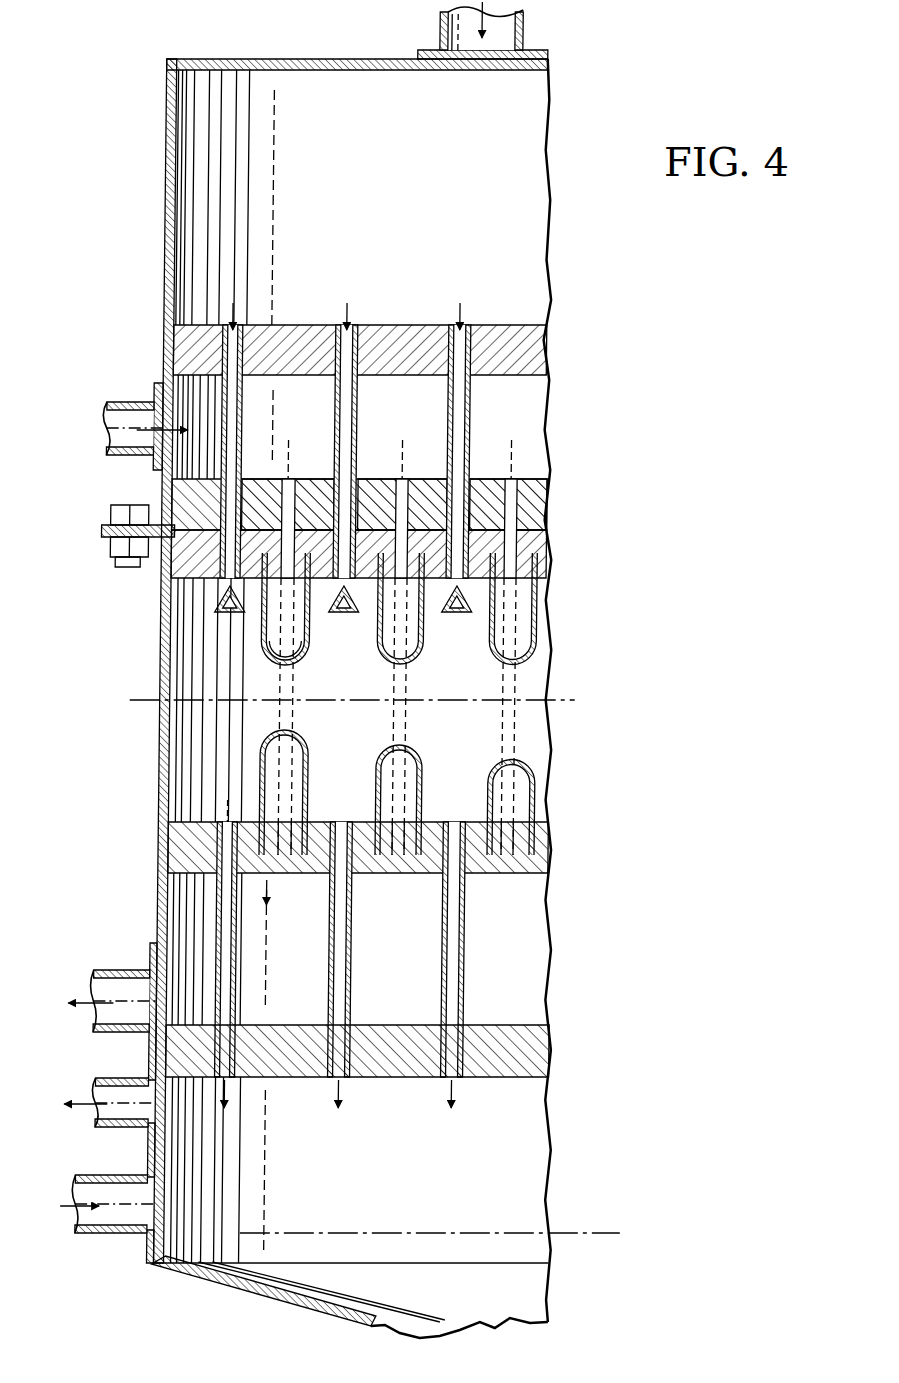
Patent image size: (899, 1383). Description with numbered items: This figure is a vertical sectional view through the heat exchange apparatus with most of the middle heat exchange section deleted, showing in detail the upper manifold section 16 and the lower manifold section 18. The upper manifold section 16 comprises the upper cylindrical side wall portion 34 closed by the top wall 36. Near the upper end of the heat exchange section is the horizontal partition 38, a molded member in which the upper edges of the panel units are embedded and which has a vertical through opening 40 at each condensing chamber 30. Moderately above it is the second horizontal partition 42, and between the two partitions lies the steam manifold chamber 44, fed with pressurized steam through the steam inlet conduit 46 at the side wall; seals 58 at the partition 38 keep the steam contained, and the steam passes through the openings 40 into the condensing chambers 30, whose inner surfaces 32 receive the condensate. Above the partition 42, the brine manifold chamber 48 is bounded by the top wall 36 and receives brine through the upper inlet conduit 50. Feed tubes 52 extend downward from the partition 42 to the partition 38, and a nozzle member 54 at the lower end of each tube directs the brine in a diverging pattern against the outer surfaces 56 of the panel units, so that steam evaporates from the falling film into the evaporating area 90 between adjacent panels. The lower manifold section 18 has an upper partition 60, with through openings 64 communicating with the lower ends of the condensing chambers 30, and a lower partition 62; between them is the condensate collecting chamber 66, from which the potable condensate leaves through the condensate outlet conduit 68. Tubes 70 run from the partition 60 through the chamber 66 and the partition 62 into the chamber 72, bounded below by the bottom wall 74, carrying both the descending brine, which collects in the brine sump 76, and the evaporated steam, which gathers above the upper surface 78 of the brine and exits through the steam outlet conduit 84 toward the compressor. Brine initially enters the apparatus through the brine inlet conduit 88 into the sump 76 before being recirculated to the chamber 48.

The upper manifold section 16 is at (597, 378).
The lower manifold section 18 is at (586, 940).
The condensing chamber 30 is at (508, 660).
The inner surface 32 is at (532, 612).
The upper cylindrical side wall portion 34 is at (164, 300).
The top wall 36 is at (346, 59).
The horizontal partition 38 is at (553, 545).
The vertical through opening 40 is at (289, 505).
The second horizontal partition 42 is at (550, 345).
The steam manifold chamber 44 is at (551, 428).
The steam inlet conduit 46 is at (156, 392).
The brine manifold chamber 48 is at (511, 219).
The upper inlet conduit 50 is at (518, 40).
The feed tube 52 is at (446, 400).
The nozzle member 54 is at (345, 614).
The outer surface 56 is at (312, 660).
The seal 58 is at (400, 479).
The upper partition 60 is at (553, 852).
The lower partition 62 is at (553, 1058).
The through opening 64 is at (402, 876).
The condensate collecting chamber 66 is at (535, 990).
The condensate outlet conduit 68 is at (117, 968).
The tube 70 is at (344, 825).
The chamber 72 is at (535, 1140).
The bottom wall 74 is at (272, 1306).
The brine sump 76 is at (553, 1282).
The upper surface 78 is at (400, 1233).
The steam outlet conduit 84 is at (110, 1128).
The brine inlet conduit 88 is at (108, 1236).
The evaporating area 90 is at (334, 743).